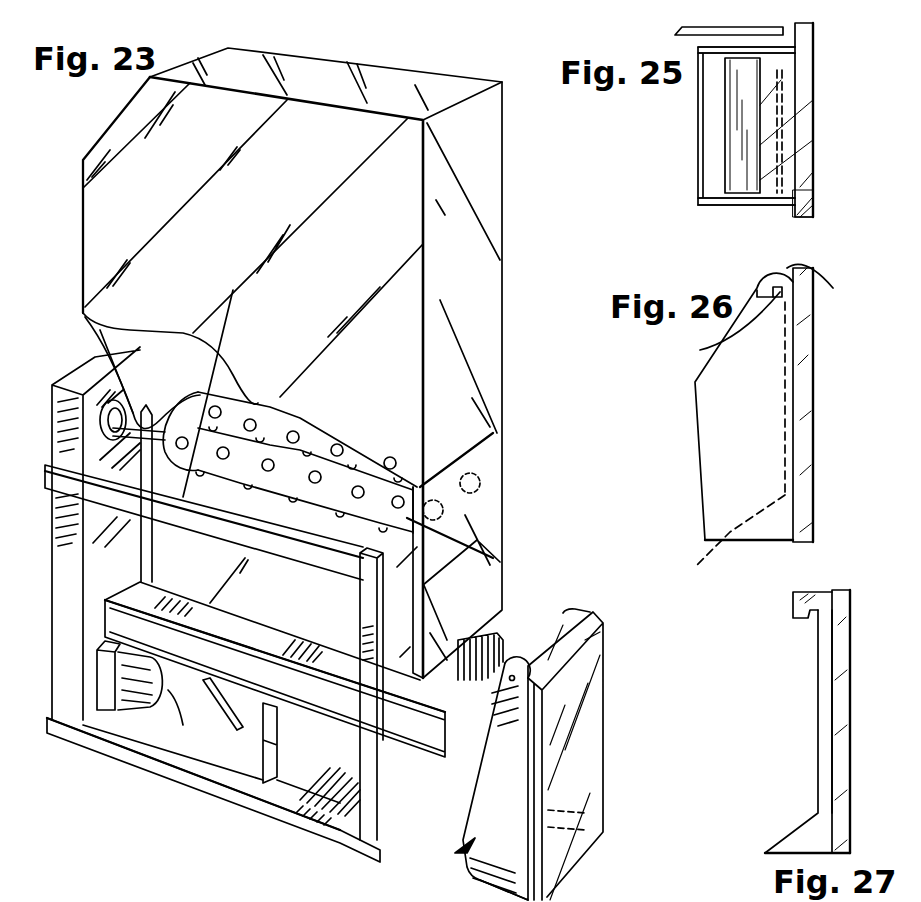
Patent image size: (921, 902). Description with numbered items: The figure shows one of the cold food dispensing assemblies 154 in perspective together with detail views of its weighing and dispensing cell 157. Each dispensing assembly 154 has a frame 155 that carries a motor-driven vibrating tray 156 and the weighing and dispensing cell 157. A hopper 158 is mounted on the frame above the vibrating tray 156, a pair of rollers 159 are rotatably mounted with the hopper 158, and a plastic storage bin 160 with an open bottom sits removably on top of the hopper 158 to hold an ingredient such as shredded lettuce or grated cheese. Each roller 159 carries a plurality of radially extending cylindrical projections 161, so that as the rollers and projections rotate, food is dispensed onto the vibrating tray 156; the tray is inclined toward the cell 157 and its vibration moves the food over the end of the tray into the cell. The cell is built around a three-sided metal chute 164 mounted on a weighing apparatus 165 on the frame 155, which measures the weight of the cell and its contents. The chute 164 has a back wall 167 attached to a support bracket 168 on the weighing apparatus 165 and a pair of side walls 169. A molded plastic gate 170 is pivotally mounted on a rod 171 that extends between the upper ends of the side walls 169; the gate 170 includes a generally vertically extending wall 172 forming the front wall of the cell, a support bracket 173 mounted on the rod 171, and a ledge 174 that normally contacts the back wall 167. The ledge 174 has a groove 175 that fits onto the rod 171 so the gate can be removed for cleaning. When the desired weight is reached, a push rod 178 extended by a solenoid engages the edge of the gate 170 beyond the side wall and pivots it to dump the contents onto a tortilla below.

In FIG. 23, the dispensing assembly 154 is at (515, 272).
In FIG. 23, the frame 155 is at (50, 682).
In FIG. 23, the vibrating tray 156 is at (320, 697).
In FIG. 23, the weighing and dispensing cell 157 is at (455, 853).
In FIG. 23, the hopper 158 is at (480, 513).
In FIG. 23, the rollers 159 is at (397, 453).
In FIG. 23, the storage bin 160 is at (483, 137).
In FIG. 23, the cylindrical projections 161 is at (85, 325).
In FIG. 23, the three-sided chute 164 is at (480, 882).
In FIG. 25, the three-sided chute 164 is at (732, 207).
In FIG. 26, the three-sided chute 164 is at (710, 462).
In FIG. 23, the weighing apparatus 165 is at (163, 677).
In FIG. 25, the back wall 167 is at (703, 140).
In FIG. 23, the support bracket 168 is at (439, 852).
In FIG. 23, the side walls 169 is at (504, 792).
In FIG. 25, the side walls 169 is at (710, 52).
In FIG. 26, the side walls 169 is at (710, 407).
In FIG. 23, the gate 170 is at (600, 705).
In FIG. 25, the gate 170 is at (800, 118).
In FIG. 26, the gate 170 is at (802, 400).
In FIG. 27, the gate 170 is at (818, 755).
In FIG. 25, the rod 171 is at (800, 153).
In FIG. 26, the rod 171 is at (710, 350).
In FIG. 26, the vertically extending wall 172 is at (807, 443).
In FIG. 27, the vertically extending wall 172 is at (843, 688).
In FIG. 23, the support bracket 173 is at (76, 901).
In FIG. 25, the support bracket 173 is at (800, 183).
In FIG. 26, the support bracket 173 is at (827, 289).
In FIG. 27, the support bracket 173 is at (815, 593).
In FIG. 26, the ledge 174 is at (724, 536).
In FIG. 27, the ledge 174 is at (800, 848).
In FIG. 27, the groove 175 is at (815, 612).
In FIG. 25, the push rod 178 is at (782, 30).